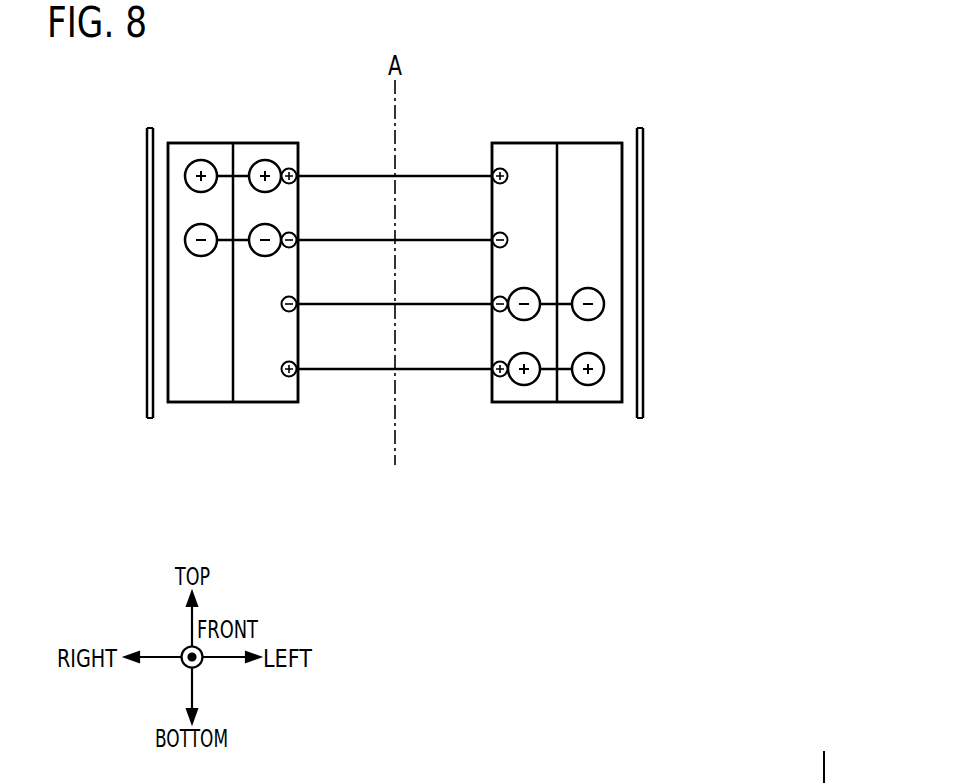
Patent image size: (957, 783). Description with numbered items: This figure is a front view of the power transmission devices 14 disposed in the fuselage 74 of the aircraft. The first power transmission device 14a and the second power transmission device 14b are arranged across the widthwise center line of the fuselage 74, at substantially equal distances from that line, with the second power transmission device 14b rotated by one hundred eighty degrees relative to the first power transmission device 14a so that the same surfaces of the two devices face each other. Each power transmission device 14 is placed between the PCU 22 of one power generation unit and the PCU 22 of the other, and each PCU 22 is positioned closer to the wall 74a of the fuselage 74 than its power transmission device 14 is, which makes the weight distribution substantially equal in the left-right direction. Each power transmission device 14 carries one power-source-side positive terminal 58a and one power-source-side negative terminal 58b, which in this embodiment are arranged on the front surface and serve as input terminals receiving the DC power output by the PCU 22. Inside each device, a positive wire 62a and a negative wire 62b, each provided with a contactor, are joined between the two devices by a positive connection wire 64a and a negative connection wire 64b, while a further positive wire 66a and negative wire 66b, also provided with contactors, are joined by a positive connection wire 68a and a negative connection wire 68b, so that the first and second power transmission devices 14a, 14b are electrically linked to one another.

The power transmission device 14 is at (395, 322).
The first power transmission device 14a is at (530, 408).
The second power transmission device 14b is at (269, 408).
The power control unit 22 is at (179, 303).
The power-source-side positive terminal 58a is at (265, 160).
The power-source-side negative terminal 58b is at (273, 228).
The positive wire 62a is at (298, 165).
The negative wire 62b is at (298, 233).
The positive connection wire 64a is at (413, 173).
The negative connection wire 64b is at (413, 238).
The positive wire 66a is at (285, 365).
The negative wire 66b is at (285, 300).
The positive connection wire 68a is at (320, 368).
The negative connection wire 68b is at (320, 303).
The fuselage 74 is at (118, 163).
The wall 74a is at (145, 202).